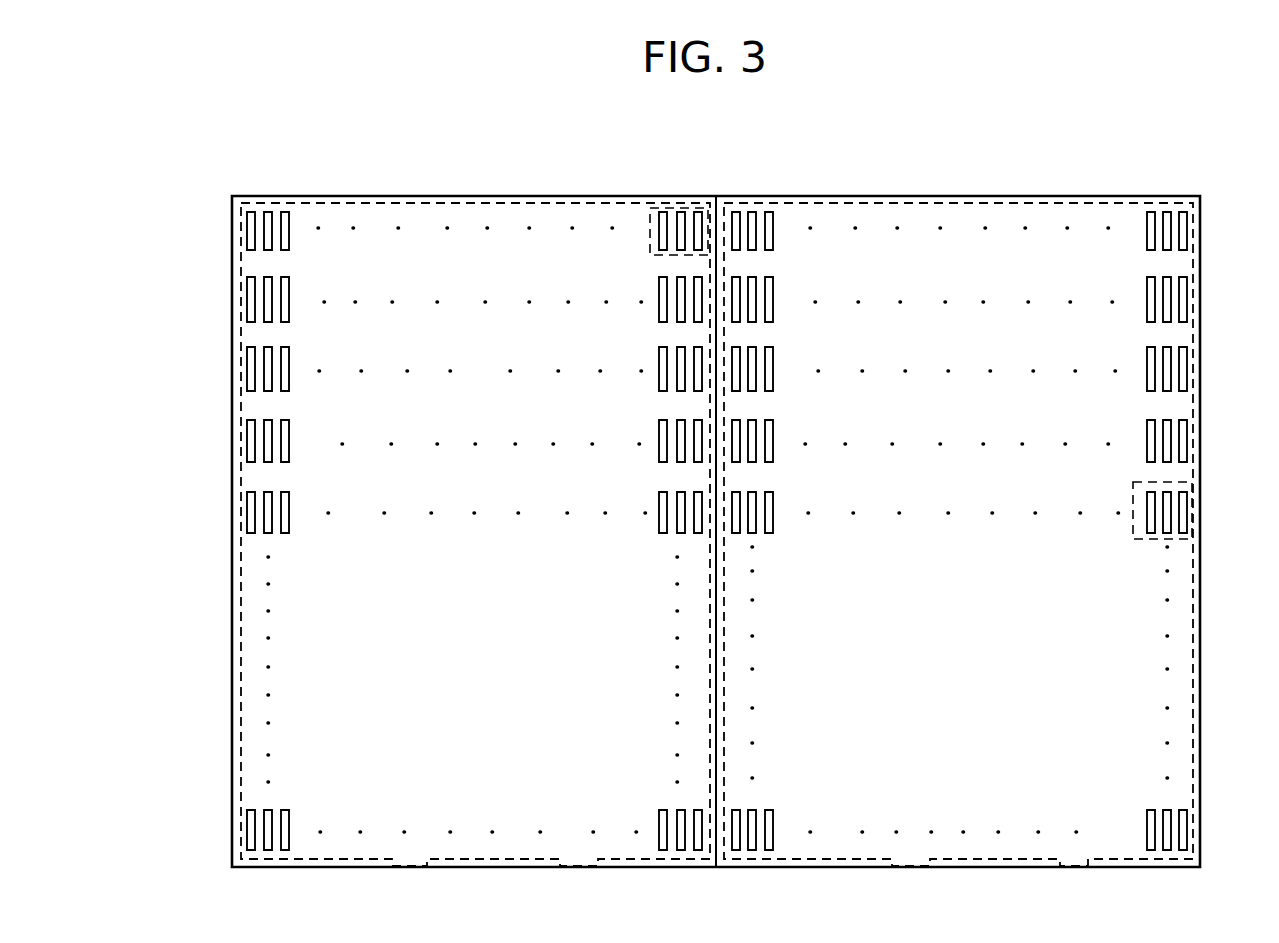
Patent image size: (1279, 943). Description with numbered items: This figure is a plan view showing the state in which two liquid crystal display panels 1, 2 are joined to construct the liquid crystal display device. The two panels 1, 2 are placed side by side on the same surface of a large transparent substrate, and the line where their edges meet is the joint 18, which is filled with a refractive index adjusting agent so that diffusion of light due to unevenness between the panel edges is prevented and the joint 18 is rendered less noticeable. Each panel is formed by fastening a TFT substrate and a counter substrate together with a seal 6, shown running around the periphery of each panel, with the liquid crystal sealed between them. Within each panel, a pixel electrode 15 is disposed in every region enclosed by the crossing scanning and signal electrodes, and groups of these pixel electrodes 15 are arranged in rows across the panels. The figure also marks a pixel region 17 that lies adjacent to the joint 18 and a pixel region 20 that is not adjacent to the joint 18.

The liquid crystal display panel 1 is at (231, 269).
The liquid crystal display panel 2 is at (1202, 264).
The seal 6 is at (243, 604).
The pixel electrode 15 is at (698, 212).
The pixel region 17 is at (703, 204).
The joint 18 is at (714, 840).
The pixel region 20 is at (1170, 483).